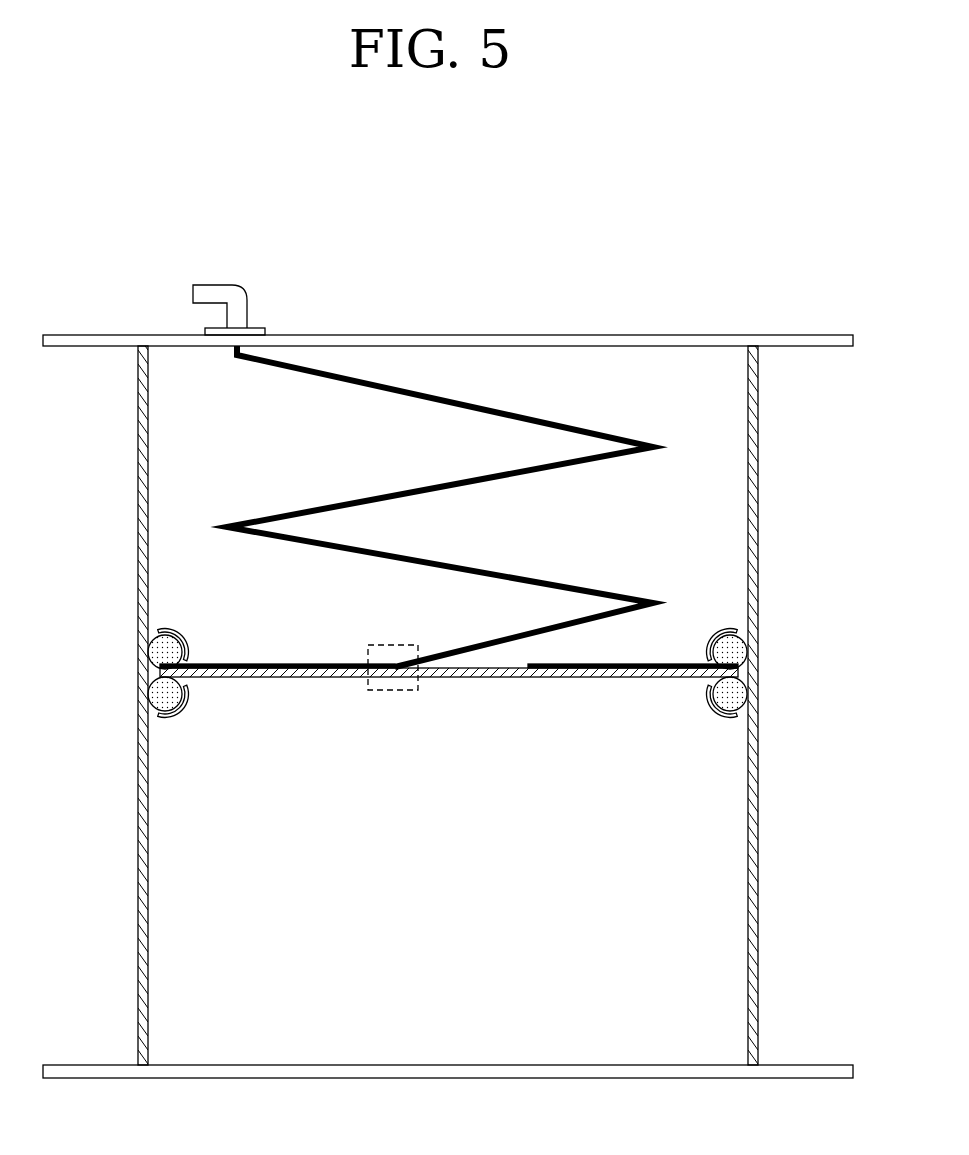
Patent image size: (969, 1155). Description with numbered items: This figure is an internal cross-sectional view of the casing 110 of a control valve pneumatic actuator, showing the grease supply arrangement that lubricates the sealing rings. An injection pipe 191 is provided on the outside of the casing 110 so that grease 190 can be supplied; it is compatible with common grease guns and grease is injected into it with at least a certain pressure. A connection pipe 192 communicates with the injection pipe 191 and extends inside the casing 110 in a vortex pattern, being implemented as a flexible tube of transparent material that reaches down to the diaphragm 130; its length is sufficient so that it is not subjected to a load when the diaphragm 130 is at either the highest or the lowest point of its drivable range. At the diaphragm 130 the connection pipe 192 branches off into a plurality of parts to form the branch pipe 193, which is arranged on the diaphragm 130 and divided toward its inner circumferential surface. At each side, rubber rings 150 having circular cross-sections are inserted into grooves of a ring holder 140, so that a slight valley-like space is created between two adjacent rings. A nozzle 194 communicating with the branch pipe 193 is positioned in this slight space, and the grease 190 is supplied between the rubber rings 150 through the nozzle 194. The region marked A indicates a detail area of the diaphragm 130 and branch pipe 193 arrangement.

The casing 110 is at (758, 442).
The diaphragm 130 is at (457, 680).
The ring holder 140 is at (183, 705).
The rubber ring 150 is at (155, 697).
The grease 190 is at (160, 671).
The injection pipe 191 is at (212, 285).
The connection pipe 192 is at (375, 388).
The branch pipe 193 is at (315, 665).
The nozzle 194 is at (167, 662).
The region A is at (382, 692).